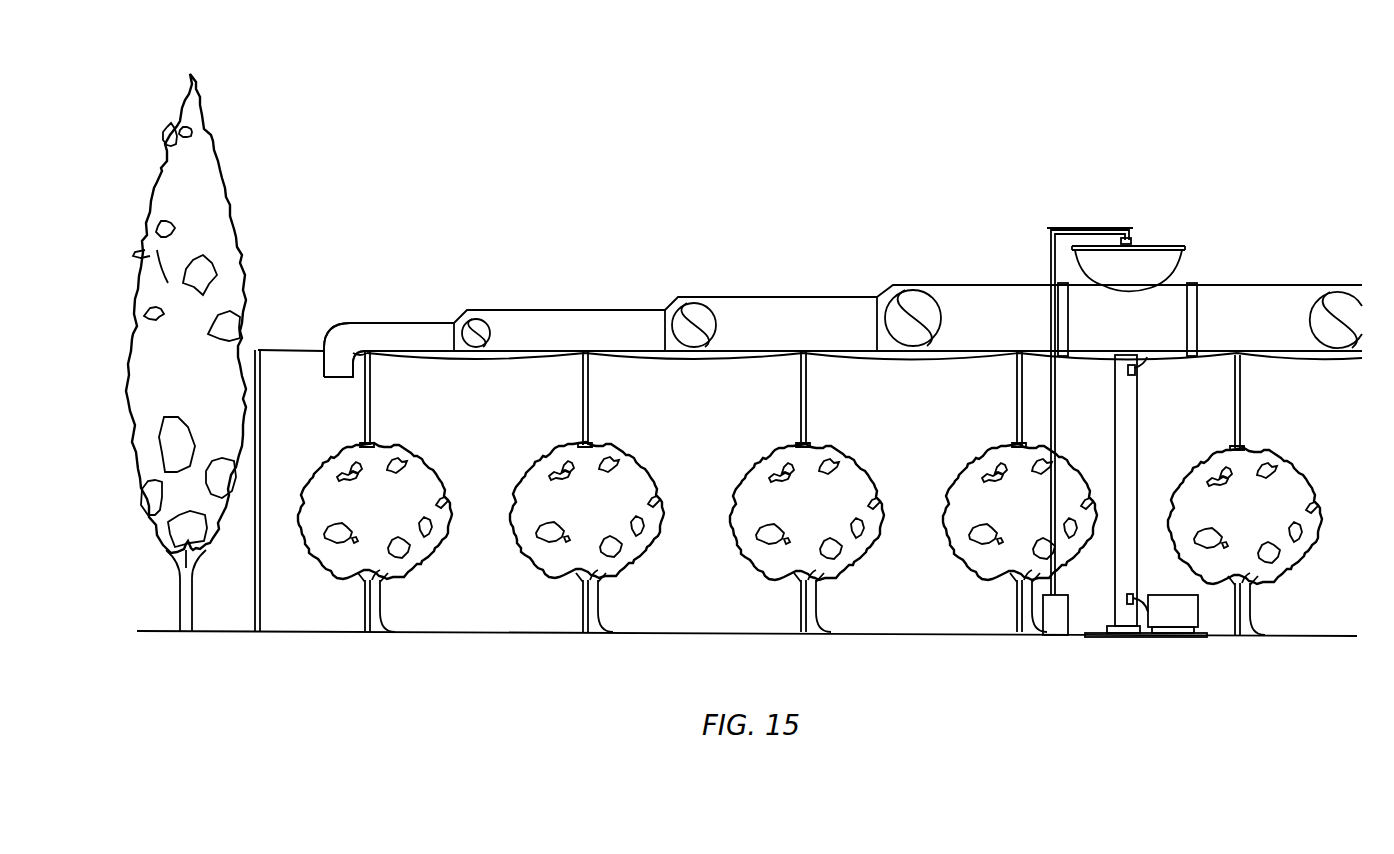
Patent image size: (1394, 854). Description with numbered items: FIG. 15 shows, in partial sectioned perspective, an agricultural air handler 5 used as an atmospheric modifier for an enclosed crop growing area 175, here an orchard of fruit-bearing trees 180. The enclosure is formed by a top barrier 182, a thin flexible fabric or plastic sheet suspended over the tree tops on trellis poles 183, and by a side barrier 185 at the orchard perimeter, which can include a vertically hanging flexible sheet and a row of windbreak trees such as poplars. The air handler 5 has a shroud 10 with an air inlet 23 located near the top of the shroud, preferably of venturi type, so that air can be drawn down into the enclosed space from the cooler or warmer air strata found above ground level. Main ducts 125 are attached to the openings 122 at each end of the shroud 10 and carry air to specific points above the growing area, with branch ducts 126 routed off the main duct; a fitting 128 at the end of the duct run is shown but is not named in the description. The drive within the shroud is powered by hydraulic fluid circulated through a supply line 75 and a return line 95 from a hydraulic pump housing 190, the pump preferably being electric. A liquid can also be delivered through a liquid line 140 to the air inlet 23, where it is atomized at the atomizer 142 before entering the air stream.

The agricultural air handler 5 is at (1209, 179).
The shroud 10 is at (1031, 263).
The air inlet 23 is at (1162, 241).
The supply line 75 is at (1115, 617).
The return line 95 is at (1134, 598).
The shroud outlets 122 is at (1068, 322).
The main ducts 125 is at (963, 297).
The branch ducts 126 is at (482, 324).
The duct elbow 128 is at (327, 366).
The liquid line 140 is at (1055, 393).
The atomizer 142 is at (1132, 240).
The enclosed crop growing area 175 is at (689, 431).
The trees 180 is at (424, 496).
The top barrier 182 is at (487, 358).
The trellis poles 183 is at (372, 383).
The side barrier 185 is at (243, 337).
The hydraulic pump housing 190 is at (1175, 619).